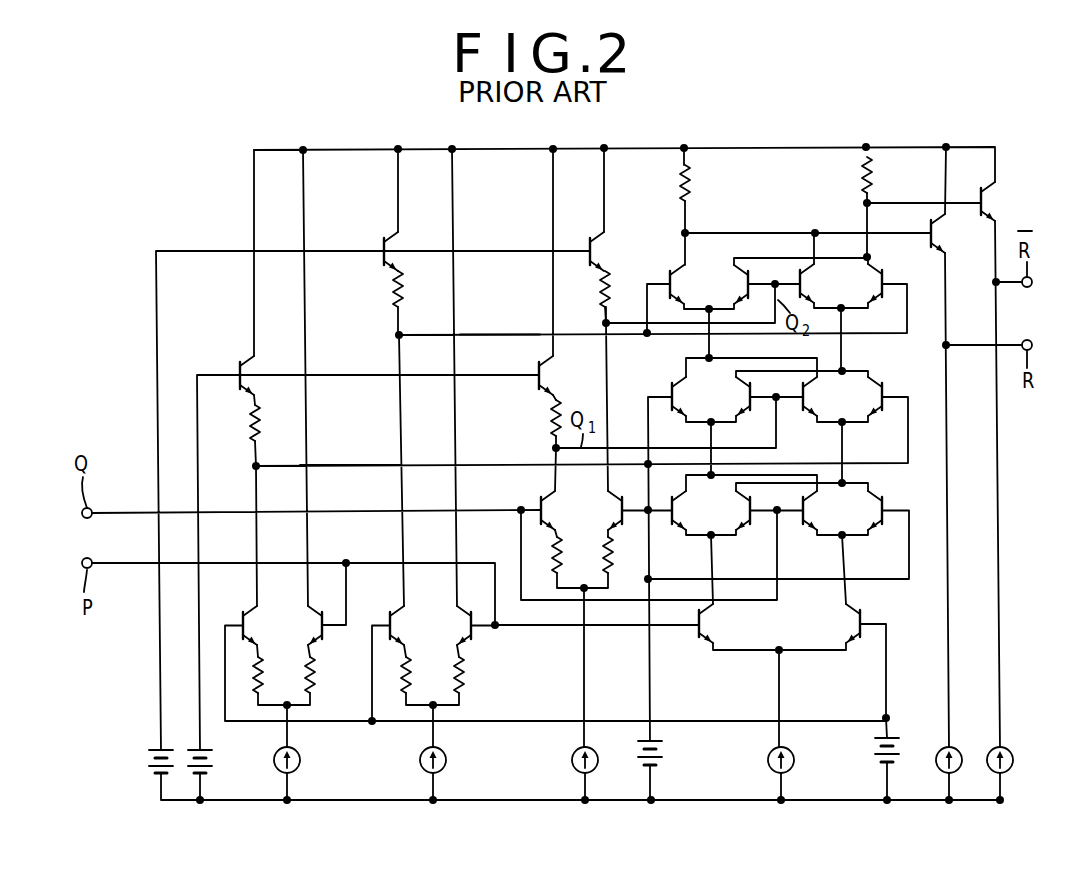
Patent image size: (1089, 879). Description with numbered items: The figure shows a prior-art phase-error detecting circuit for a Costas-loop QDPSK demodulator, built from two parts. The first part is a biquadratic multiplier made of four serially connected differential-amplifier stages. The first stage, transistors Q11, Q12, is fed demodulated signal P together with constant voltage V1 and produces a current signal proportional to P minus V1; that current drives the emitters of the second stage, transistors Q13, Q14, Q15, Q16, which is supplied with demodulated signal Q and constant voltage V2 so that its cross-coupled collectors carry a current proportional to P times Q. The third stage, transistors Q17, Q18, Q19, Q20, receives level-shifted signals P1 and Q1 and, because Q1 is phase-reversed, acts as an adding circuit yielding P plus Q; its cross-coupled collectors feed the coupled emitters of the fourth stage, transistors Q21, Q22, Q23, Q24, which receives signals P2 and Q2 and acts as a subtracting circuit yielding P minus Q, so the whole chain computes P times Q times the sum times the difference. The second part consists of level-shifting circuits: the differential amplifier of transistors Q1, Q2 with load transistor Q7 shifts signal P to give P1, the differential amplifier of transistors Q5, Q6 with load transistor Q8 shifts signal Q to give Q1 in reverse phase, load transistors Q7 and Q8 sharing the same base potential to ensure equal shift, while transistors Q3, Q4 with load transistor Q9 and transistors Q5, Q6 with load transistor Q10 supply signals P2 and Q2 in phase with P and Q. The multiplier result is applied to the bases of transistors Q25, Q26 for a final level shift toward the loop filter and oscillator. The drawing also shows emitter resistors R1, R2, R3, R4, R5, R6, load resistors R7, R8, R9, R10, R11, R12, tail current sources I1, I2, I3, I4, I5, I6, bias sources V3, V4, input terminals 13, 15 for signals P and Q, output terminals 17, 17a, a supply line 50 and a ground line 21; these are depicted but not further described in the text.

The transistor Q1 is at (243, 610).
The transistor Q2 is at (318, 625).
The transistor Q3 is at (397, 607).
The transistor Q4 is at (466, 625).
The transistor Q5 is at (541, 492).
The transistor Q6 is at (617, 500).
The load transistor Q7 is at (242, 360).
The load transistor Q8 is at (545, 358).
The load transistor Q9 is at (392, 236).
The load transistor Q10 is at (598, 236).
The transistor Q11 is at (703, 642).
The transistor Q12 is at (856, 642).
The transistor Q13 is at (672, 496).
The transistor Q14 is at (748, 526).
The transistor Q15 is at (803, 526).
The transistor Q16 is at (883, 526).
The transistor Q17 is at (670, 382).
The transistor Q18 is at (748, 413).
The transistor Q19 is at (802, 413).
The transistor Q20 is at (883, 413).
The transistor Q21 is at (672, 268).
The transistor Q22 is at (744, 270).
The transistor Q23 is at (803, 283).
The transistor Q24 is at (884, 269).
The transistor Q25 is at (934, 236).
The transistor Q26 is at (994, 190).
The resistor R1 is at (262, 665).
The resistor R2 is at (313, 668).
The resistor R3 is at (408, 665).
The resistor R4 is at (464, 668).
The resistor R5 is at (562, 547).
The resistor R6 is at (606, 556).
The resistor R7 is at (250, 420).
The resistor R8 is at (548, 425).
The resistor R9 is at (392, 296).
The resistor R10 is at (602, 300).
The resistor R11 is at (692, 185).
The resistor R12 is at (858, 180).
The constant current source I1 is at (302, 760).
The constant current source I2 is at (447, 760).
The constant current source I3 is at (572, 760).
The constant current source I4 is at (768, 760).
The constant current source I5 is at (974, 772).
The constant current source I6 is at (1034, 772).
The constant voltage V1 is at (878, 758).
The constant voltage V2 is at (660, 758).
The voltage source V3 is at (208, 760).
The voltage source V4 is at (150, 758).
The input terminal P 13 is at (82, 563).
The input terminal Q 15 is at (82, 513).
The output terminal R 17 is at (1060, 343).
The inverted output terminal 17a is at (1055, 282).
The ground line 21 is at (373, 798).
The power supply line 50 is at (278, 148).
The level-shifted signal P1 is at (349, 463).
The level-shifted signal P2 is at (501, 333).